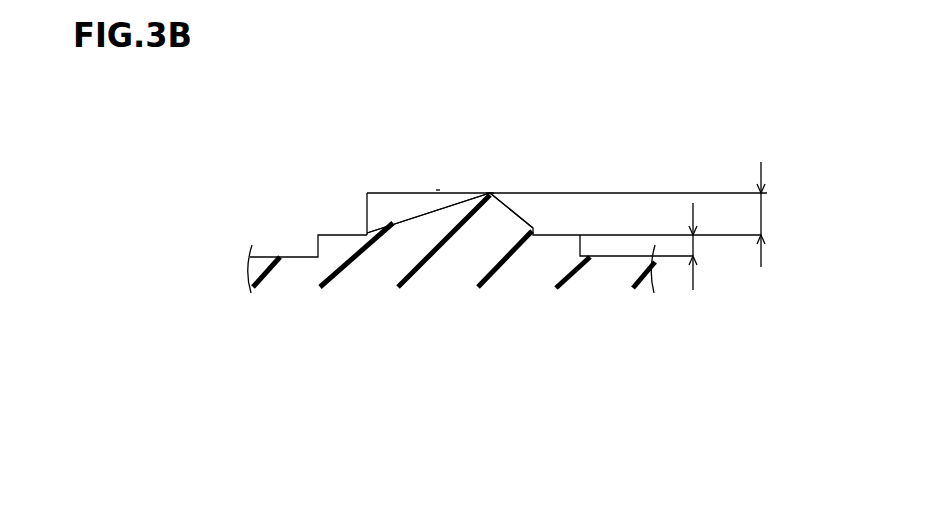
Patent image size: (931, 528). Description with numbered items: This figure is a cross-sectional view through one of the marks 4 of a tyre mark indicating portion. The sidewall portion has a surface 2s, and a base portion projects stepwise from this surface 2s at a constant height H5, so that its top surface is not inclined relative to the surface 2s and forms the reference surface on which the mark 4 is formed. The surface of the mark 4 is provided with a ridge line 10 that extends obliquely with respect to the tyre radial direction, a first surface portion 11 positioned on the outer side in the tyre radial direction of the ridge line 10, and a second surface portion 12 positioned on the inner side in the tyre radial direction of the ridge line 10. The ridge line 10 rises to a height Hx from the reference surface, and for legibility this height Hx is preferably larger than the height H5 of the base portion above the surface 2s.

The surface of the sidewall portion 2s is at (292, 256).
The first surface portion 11 is at (423, 212).
The ridge line 10 is at (488, 189).
The second surface portion 12 is at (518, 213).
The mark 4 is at (438, 174).
The height of the ridge line Hx is at (777, 214).
The height of the base portion H5 is at (695, 247).